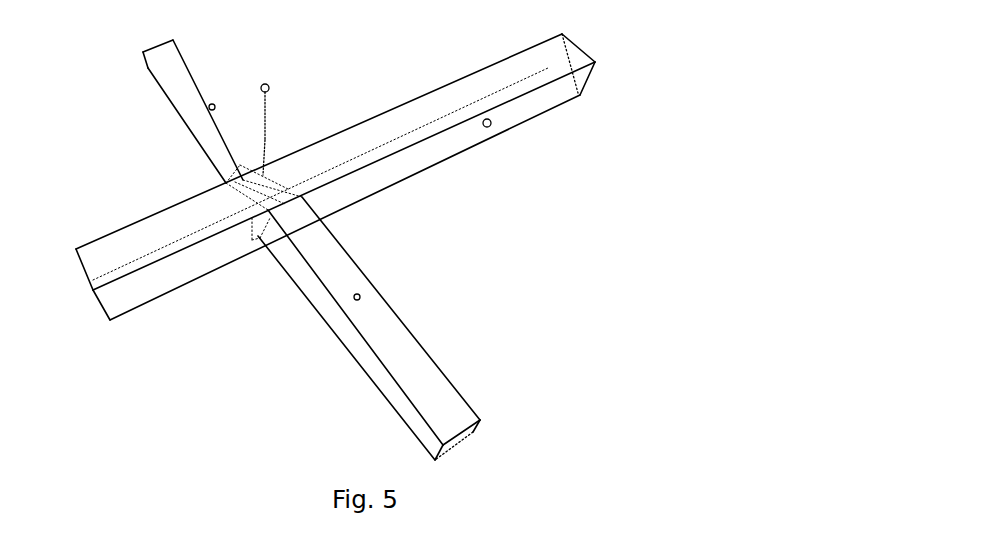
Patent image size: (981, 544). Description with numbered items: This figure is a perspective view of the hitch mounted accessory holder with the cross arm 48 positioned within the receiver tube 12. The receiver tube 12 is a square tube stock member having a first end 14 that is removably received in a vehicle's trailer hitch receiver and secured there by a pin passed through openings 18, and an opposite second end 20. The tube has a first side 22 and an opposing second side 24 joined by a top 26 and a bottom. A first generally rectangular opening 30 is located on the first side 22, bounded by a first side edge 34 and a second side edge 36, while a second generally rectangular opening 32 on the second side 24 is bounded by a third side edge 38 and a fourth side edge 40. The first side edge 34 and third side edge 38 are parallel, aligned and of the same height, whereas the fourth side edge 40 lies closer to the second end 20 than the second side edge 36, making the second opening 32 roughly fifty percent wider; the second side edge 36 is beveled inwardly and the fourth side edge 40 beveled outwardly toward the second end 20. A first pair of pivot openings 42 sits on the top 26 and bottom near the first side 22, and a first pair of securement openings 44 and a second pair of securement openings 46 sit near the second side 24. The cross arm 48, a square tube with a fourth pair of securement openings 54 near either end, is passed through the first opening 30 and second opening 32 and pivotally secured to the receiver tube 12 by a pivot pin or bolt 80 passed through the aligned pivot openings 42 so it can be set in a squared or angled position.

The receiver tube 12 is at (510, 128).
The first end 14 is at (587, 43).
The openings 18 is at (490, 127).
The second end 20 is at (88, 283).
The first side 22 is at (470, 77).
The second side 24 is at (422, 160).
The top 26 is at (538, 70).
The first opening 30 is at (245, 176).
The second opening 32 is at (258, 232).
The first side edge 34 is at (281, 168).
The second side edge 36 is at (225, 187).
The third side edge 38 is at (303, 200).
The fourth side edge 40 is at (258, 237).
The first pair of corresponding pivot openings 42 is at (268, 178).
The first pair of corresponding securement openings 44 is at (303, 178).
The second pair of corresponding securement openings 46 is at (255, 200).
The cross arm 48 is at (422, 347).
The fourth pair of corresponding securement openings 54 is at (208, 106).
The pivot pin or bolt 80 is at (265, 86).